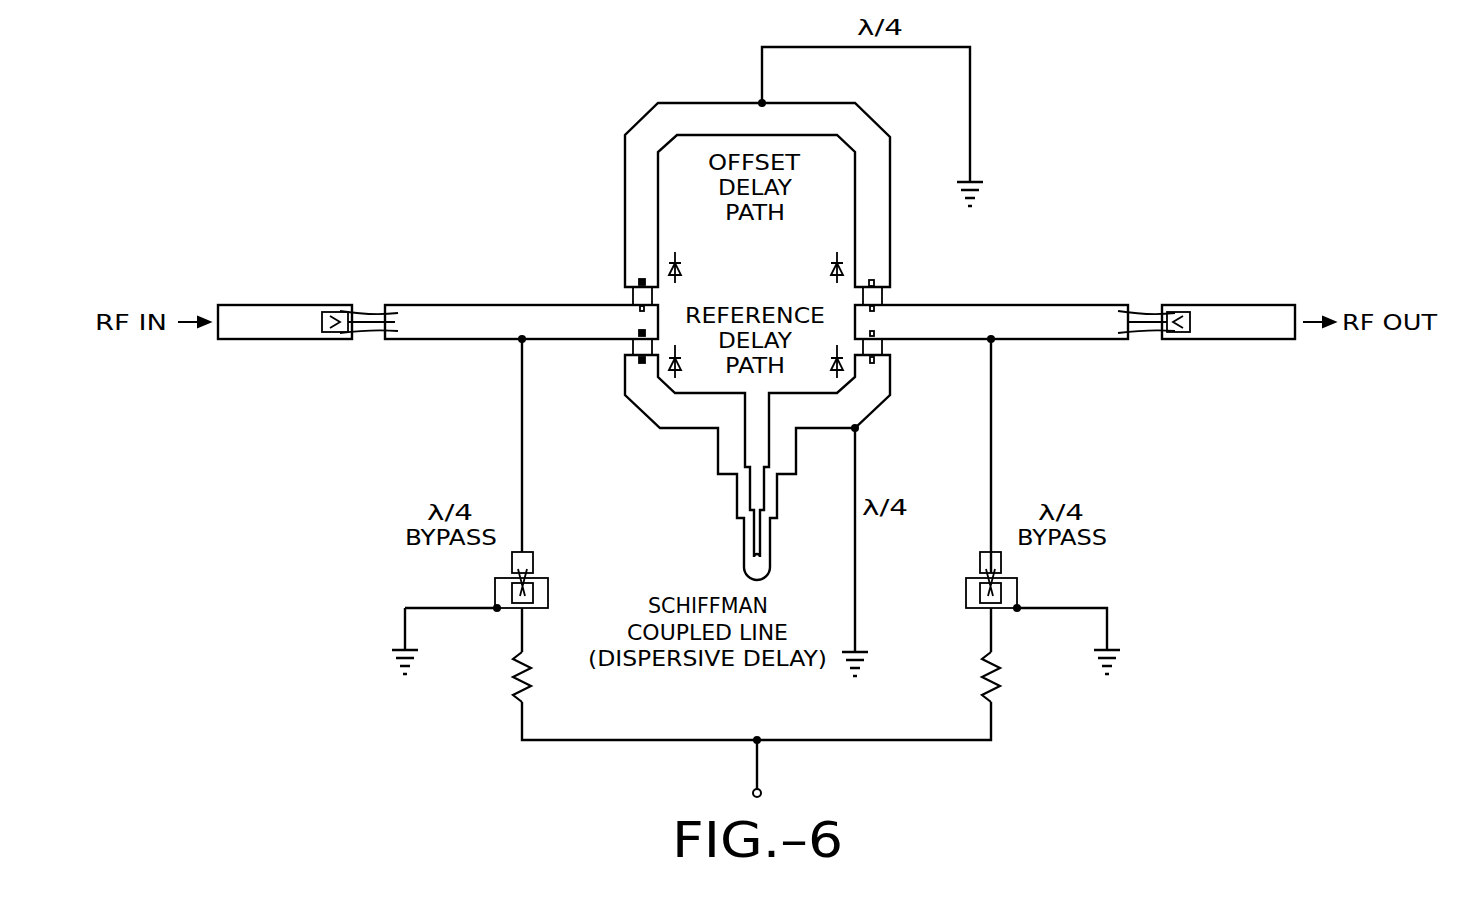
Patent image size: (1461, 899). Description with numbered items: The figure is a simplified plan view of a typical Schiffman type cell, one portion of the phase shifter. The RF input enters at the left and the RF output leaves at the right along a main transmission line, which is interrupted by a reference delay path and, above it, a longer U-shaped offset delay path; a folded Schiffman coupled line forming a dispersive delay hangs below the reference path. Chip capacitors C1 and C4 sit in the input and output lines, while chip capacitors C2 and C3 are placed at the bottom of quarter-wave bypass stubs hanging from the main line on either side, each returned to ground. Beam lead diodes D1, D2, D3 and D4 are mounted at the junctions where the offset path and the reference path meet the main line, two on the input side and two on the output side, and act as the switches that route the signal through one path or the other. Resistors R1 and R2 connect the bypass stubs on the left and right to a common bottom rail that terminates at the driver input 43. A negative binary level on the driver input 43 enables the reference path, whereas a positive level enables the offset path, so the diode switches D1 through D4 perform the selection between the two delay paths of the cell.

The chip capacitor C1 is at (360, 305).
The chip capacitor C4 is at (1154, 305).
The chip capacitor C2 is at (502, 580).
The chip capacitor C3 is at (1010, 580).
The beam lead diode D1 is at (618, 285).
The beam lead diode D2 is at (618, 355).
The beam lead diode D3 is at (895, 285).
The beam lead diode D4 is at (895, 356).
The bias resistor R1 is at (539, 677).
The bias resistor R2 is at (1010, 677).
The driver input 43 is at (761, 792).